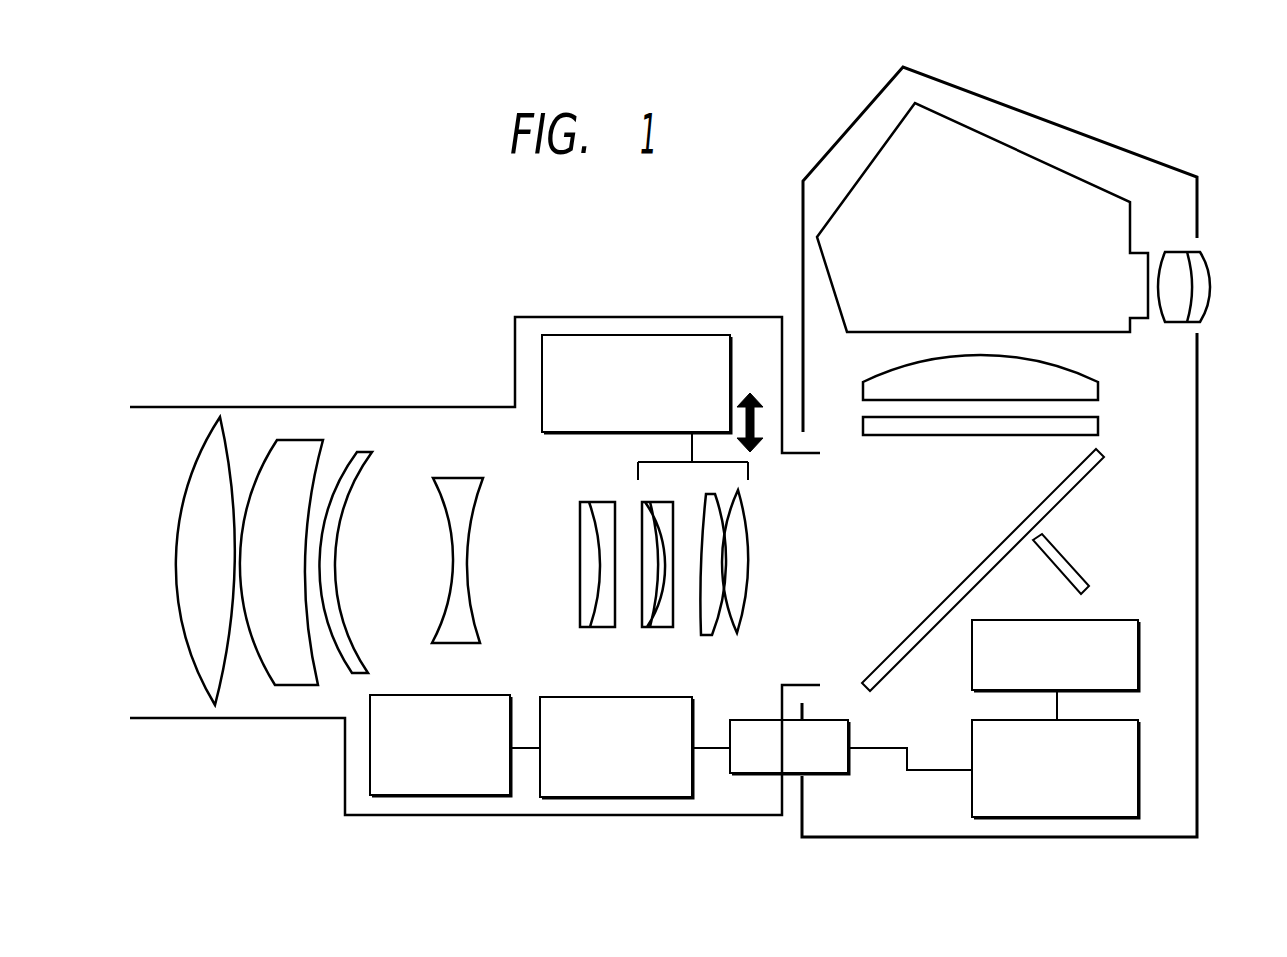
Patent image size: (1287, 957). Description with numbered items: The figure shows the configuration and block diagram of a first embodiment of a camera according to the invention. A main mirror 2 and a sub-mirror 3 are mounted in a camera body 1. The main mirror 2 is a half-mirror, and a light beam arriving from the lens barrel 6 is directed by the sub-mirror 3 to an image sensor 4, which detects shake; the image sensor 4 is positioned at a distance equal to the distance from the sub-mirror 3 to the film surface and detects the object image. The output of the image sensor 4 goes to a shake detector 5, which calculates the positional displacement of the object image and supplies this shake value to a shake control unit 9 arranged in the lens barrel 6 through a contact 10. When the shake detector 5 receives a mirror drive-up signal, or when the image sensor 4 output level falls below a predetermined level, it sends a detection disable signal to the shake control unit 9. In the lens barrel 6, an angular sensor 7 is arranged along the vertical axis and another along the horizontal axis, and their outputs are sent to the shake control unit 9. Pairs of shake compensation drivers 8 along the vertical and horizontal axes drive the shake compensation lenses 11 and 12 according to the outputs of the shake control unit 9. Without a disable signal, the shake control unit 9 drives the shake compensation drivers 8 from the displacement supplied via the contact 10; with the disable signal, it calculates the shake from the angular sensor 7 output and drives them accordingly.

The camera body 1 is at (1198, 651).
The main mirror 2 is at (1094, 478).
The sub-mirror 3 is at (1078, 568).
The image sensor 4 is at (1134, 620).
The shake detector 5 is at (1141, 757).
The lens barrel 6 is at (355, 407).
The angular sensor 7 is at (488, 695).
The shake compensation driver 8 is at (692, 335).
The shake control unit 9 is at (658, 697).
The contact 10 is at (758, 720).
The shake compensation lens 11 is at (656, 502).
The shake compensation lens 12 is at (747, 506).